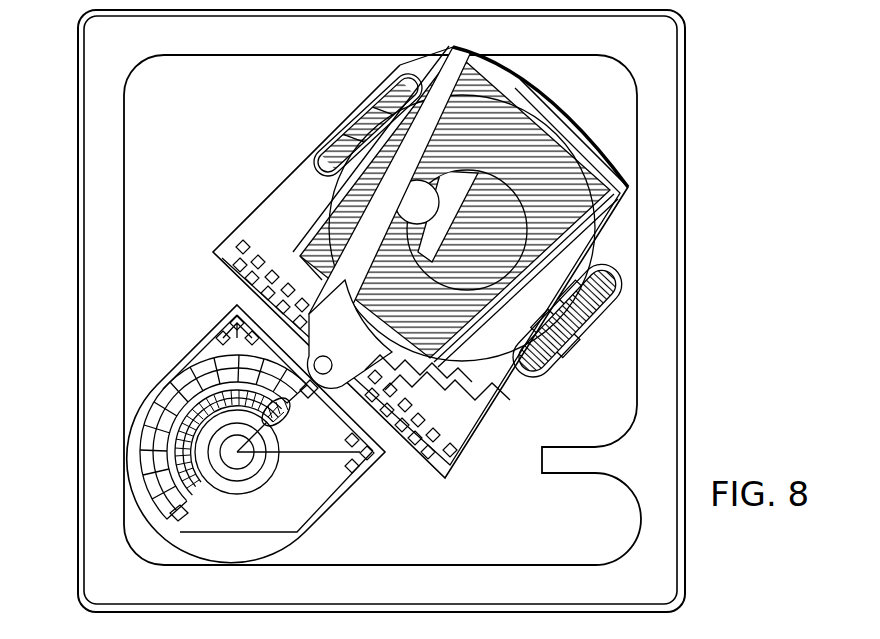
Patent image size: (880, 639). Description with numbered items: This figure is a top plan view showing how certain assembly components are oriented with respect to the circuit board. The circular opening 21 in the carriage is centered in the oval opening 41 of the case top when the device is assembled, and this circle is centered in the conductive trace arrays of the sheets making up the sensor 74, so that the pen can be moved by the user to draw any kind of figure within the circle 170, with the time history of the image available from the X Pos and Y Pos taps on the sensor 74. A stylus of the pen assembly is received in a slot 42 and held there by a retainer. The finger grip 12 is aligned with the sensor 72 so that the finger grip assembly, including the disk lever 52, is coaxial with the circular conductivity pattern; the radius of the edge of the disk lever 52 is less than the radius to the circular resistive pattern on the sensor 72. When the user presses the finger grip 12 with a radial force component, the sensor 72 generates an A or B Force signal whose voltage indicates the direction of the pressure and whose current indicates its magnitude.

The circle 170 is at (575, 162).
The oval opening 41 is at (600, 240).
The sensor 74 is at (585, 241).
The circular opening 21 is at (578, 246).
The slot 42 is at (550, 368).
The finger grip 12 is at (212, 446).
The disk lever 52 is at (215, 455).
The sensor 72 is at (162, 518).